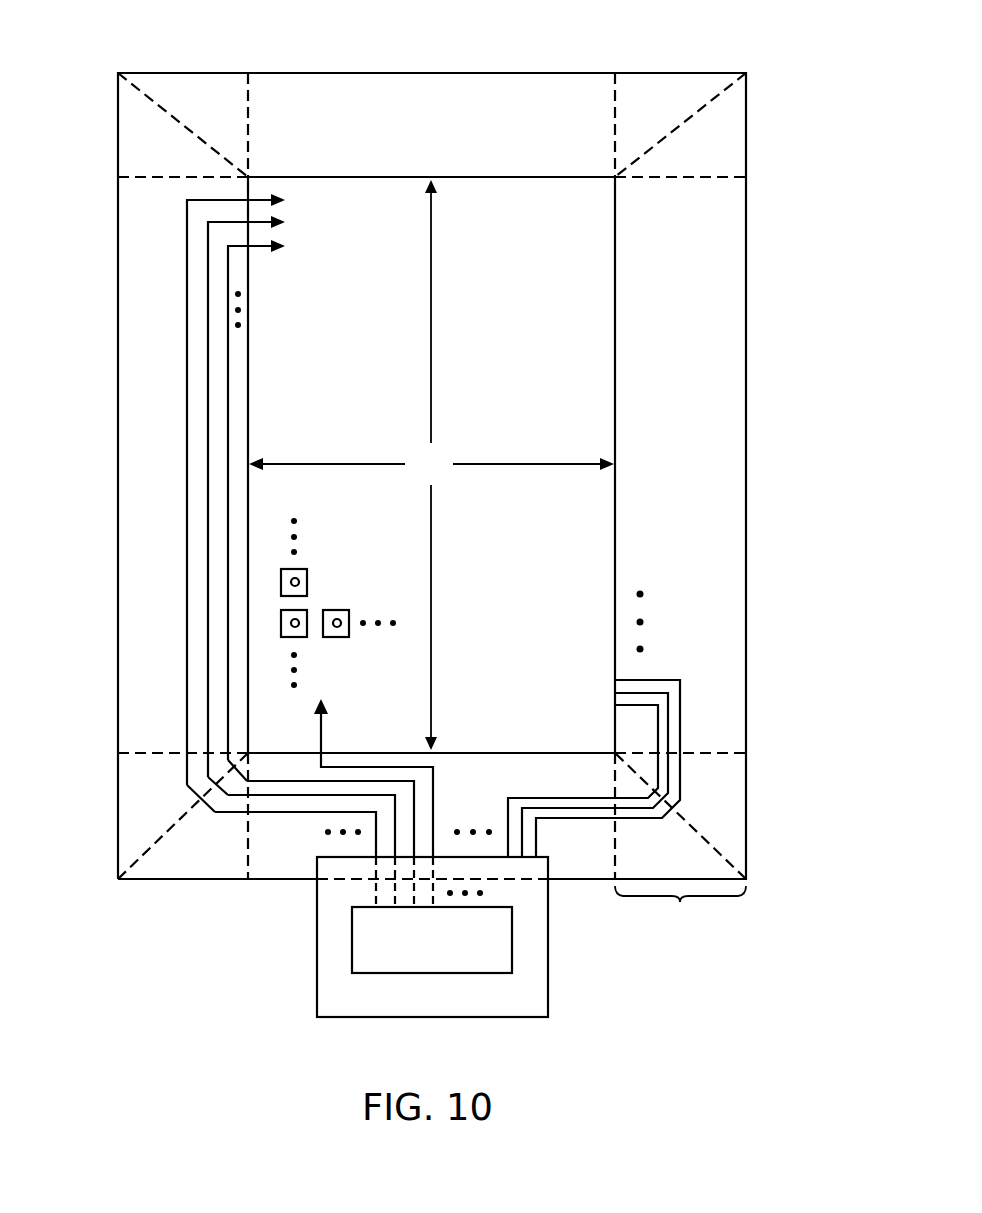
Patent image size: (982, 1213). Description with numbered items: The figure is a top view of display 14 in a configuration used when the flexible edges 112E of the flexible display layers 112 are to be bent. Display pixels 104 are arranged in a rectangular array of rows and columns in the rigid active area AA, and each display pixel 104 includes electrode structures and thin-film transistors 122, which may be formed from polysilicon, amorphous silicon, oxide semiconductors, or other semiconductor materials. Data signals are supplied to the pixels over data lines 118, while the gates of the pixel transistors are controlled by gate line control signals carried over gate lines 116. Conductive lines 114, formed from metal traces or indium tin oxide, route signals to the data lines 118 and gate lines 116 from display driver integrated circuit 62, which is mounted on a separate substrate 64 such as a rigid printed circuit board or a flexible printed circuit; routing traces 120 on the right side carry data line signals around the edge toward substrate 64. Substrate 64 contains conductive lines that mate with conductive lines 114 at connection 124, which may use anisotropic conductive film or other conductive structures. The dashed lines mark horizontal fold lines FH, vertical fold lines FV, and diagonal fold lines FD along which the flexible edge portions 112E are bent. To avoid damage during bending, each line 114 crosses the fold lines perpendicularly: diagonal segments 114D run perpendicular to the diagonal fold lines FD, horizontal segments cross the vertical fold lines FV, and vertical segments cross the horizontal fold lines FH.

The display 14 is at (738, 42).
The flexible display layers 112 is at (747, 516).
The flexible edge portions 112E is at (680, 910).
The active area AA is at (431, 465).
The vertical fold lines FV is at (254, 116).
The horizontal fold lines FH is at (150, 181).
The diagonal fold lines FD is at (184, 108).
The conductive lines 114 is at (171, 702).
The diagonal segments 114D is at (184, 798).
The gate lines 116 is at (262, 248).
The data lines 118 is at (322, 740).
The data line routing traces 120 is at (594, 724).
The display pixels 104 is at (337, 610).
The thin-film transistors 122 is at (297, 578).
The connection 124 is at (314, 868).
The display driver integrated circuit 62 is at (352, 960).
The substrate 64 is at (548, 987).